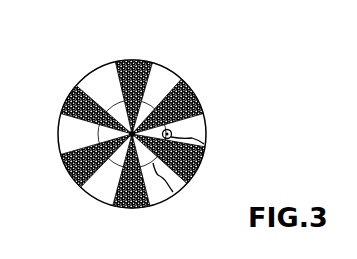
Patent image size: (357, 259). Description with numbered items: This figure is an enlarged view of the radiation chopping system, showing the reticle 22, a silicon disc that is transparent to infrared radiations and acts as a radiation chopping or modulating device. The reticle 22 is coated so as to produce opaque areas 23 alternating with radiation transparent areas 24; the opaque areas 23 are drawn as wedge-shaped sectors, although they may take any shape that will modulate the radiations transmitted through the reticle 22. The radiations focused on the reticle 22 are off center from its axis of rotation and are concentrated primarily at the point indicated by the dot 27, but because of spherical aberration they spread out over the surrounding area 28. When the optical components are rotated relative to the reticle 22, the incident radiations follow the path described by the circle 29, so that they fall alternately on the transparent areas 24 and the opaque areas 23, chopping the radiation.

The reticle 22 is at (178, 75).
The opaque areas 23 is at (142, 63).
The radiation transparent areas 24 is at (102, 72).
The dot 27 is at (204, 144).
The area 28 is at (172, 133).
The circle 29 is at (173, 192).